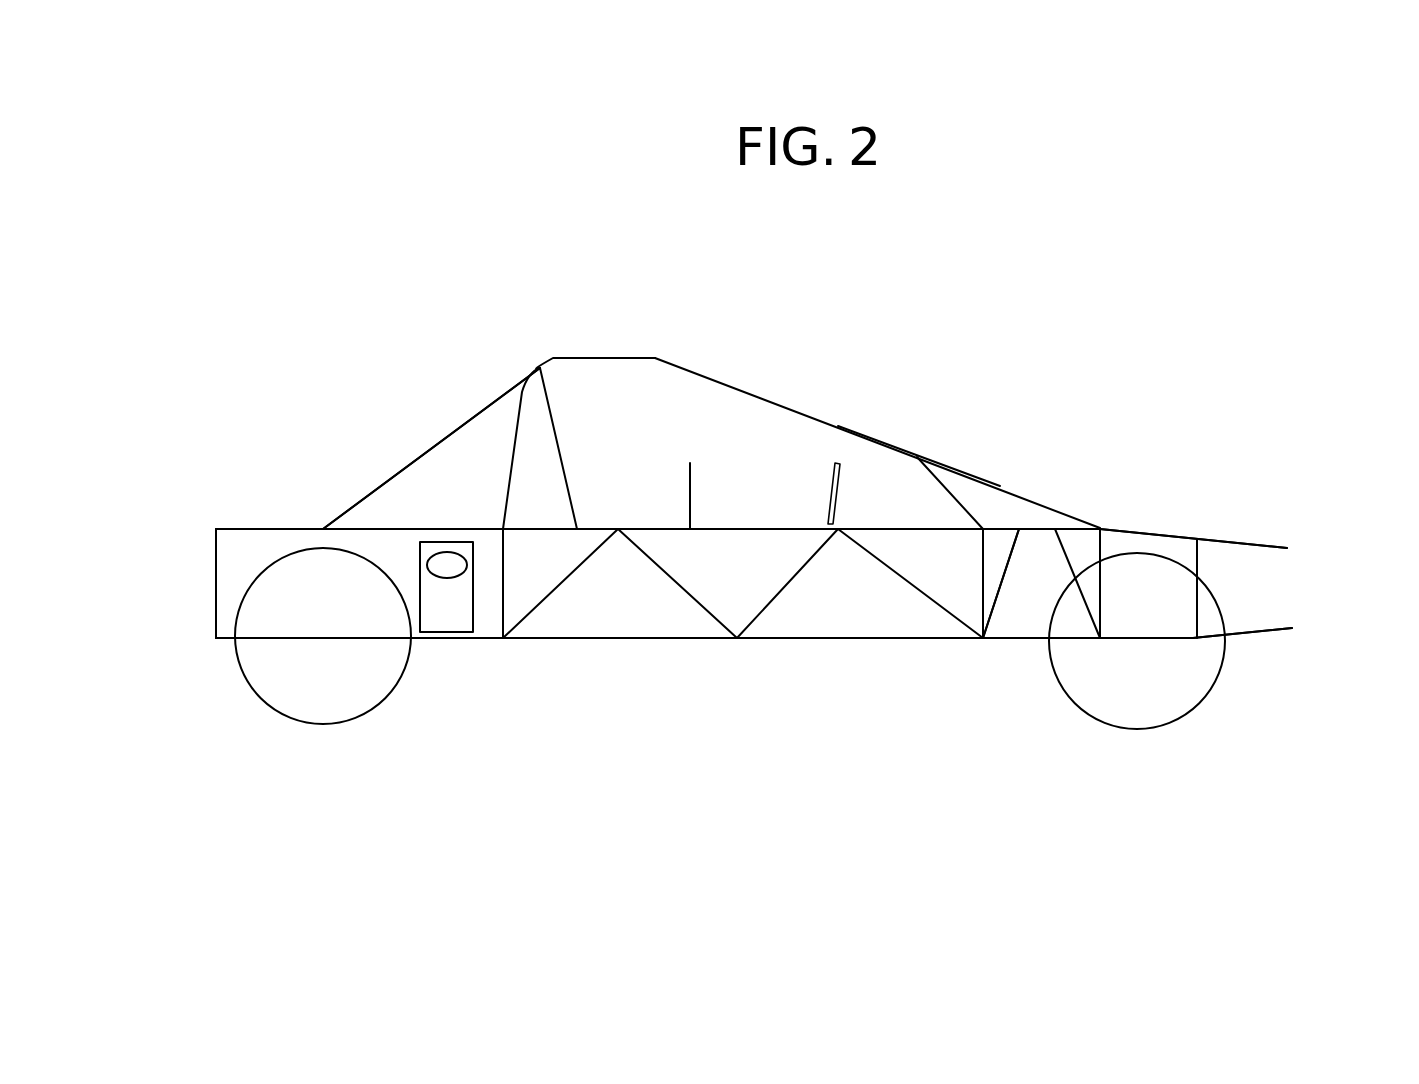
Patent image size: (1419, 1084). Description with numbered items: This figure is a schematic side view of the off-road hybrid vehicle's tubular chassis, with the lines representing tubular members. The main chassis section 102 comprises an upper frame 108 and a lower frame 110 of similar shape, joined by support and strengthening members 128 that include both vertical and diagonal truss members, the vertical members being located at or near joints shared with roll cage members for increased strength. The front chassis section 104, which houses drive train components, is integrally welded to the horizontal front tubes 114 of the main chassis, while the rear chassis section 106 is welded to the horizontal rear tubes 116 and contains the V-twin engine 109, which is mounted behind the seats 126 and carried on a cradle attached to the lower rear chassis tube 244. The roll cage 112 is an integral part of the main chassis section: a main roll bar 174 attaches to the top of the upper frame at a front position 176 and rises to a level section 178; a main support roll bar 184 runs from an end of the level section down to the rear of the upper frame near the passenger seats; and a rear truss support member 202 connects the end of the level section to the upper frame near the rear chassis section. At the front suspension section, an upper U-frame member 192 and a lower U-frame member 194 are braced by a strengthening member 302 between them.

The main chassis section 102 is at (758, 698).
The front chassis section 104 is at (1161, 386).
The rear chassis section 106 is at (310, 437).
The upper frame 108 is at (703, 480).
The engine 109 is at (438, 632).
The lower frame 110 is at (1258, 494).
The roll cage 112 is at (870, 393).
The horizontal front tubes 114 is at (1100, 527).
The horizontal rear tubes 116 is at (500, 529).
The seats 126 is at (758, 353).
The support and strengthening members 128 is at (662, 689).
The main roll bar 174 is at (1007, 487).
The front position 176 is at (1100, 527).
The level section 178 is at (617, 320).
The main support roll bar 184 is at (575, 488).
The upper U-frame member 192 is at (1250, 540).
The lower U-frame member 194 is at (918, 460).
The rear truss support member 202 is at (515, 432).
The lower rear chassis tube 244 is at (230, 638).
The strengthening member 302 is at (1197, 558).